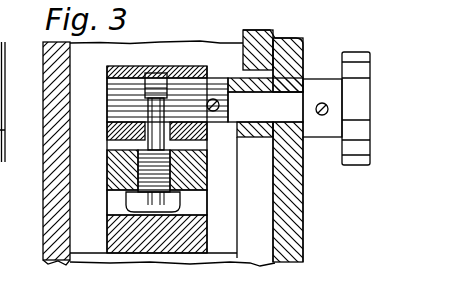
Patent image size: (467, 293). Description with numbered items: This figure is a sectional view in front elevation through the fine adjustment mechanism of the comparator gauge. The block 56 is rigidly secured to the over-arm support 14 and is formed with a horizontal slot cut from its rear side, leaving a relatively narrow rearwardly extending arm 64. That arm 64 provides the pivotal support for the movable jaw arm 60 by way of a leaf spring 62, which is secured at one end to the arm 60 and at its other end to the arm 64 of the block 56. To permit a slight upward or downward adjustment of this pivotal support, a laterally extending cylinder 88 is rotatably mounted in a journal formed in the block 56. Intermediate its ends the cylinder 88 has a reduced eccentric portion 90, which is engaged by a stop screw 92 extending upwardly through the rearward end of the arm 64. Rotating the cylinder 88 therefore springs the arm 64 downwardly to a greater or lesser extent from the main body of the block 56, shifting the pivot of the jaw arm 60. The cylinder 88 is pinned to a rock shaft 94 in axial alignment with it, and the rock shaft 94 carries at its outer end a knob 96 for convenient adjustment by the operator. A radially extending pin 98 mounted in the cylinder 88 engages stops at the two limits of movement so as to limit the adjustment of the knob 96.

The over-arm support 14 is at (43, 190).
The block 56 is at (129, 66).
The arm 60 is at (200, 233).
The leaf spring 62 is at (195, 206).
The rearwardly extending arm 64 is at (200, 191).
The cylinder 88 is at (208, 93).
The reduced eccentric portion 90 is at (155, 88).
The stop screw 92 is at (199, 172).
The rock shaft 94 is at (285, 108).
The knob 96 is at (366, 70).
The radially extending pin 98 is at (214, 111).